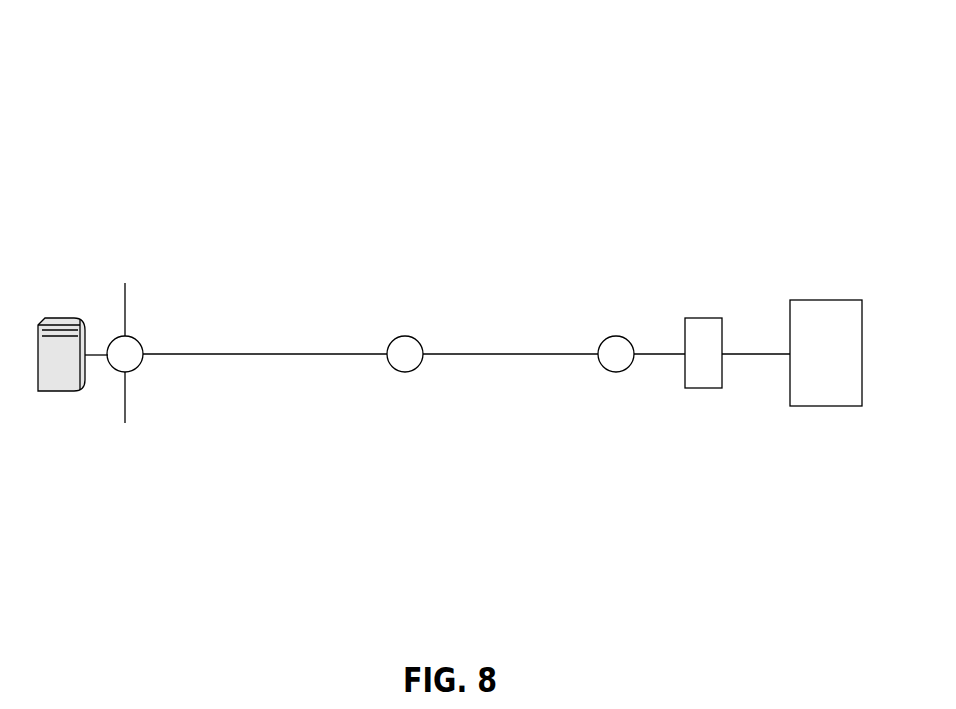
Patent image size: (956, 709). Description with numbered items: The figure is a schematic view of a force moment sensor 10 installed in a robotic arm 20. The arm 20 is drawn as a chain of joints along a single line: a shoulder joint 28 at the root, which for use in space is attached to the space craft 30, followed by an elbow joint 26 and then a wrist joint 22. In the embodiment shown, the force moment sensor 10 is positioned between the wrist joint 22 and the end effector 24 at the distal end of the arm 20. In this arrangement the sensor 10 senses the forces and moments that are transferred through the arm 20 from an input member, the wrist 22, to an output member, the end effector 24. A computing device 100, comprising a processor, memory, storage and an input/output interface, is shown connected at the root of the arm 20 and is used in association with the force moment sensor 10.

The robotic arm 20 is at (670, 152).
The computing device 100 is at (60, 392).
The shoulder joint 28 is at (127, 357).
The space craft 30 is at (125, 403).
The elbow joint 26 is at (407, 348).
The wrist joint 22 is at (617, 358).
The force moment sensor 10 is at (703, 317).
The end effector 24 is at (825, 398).